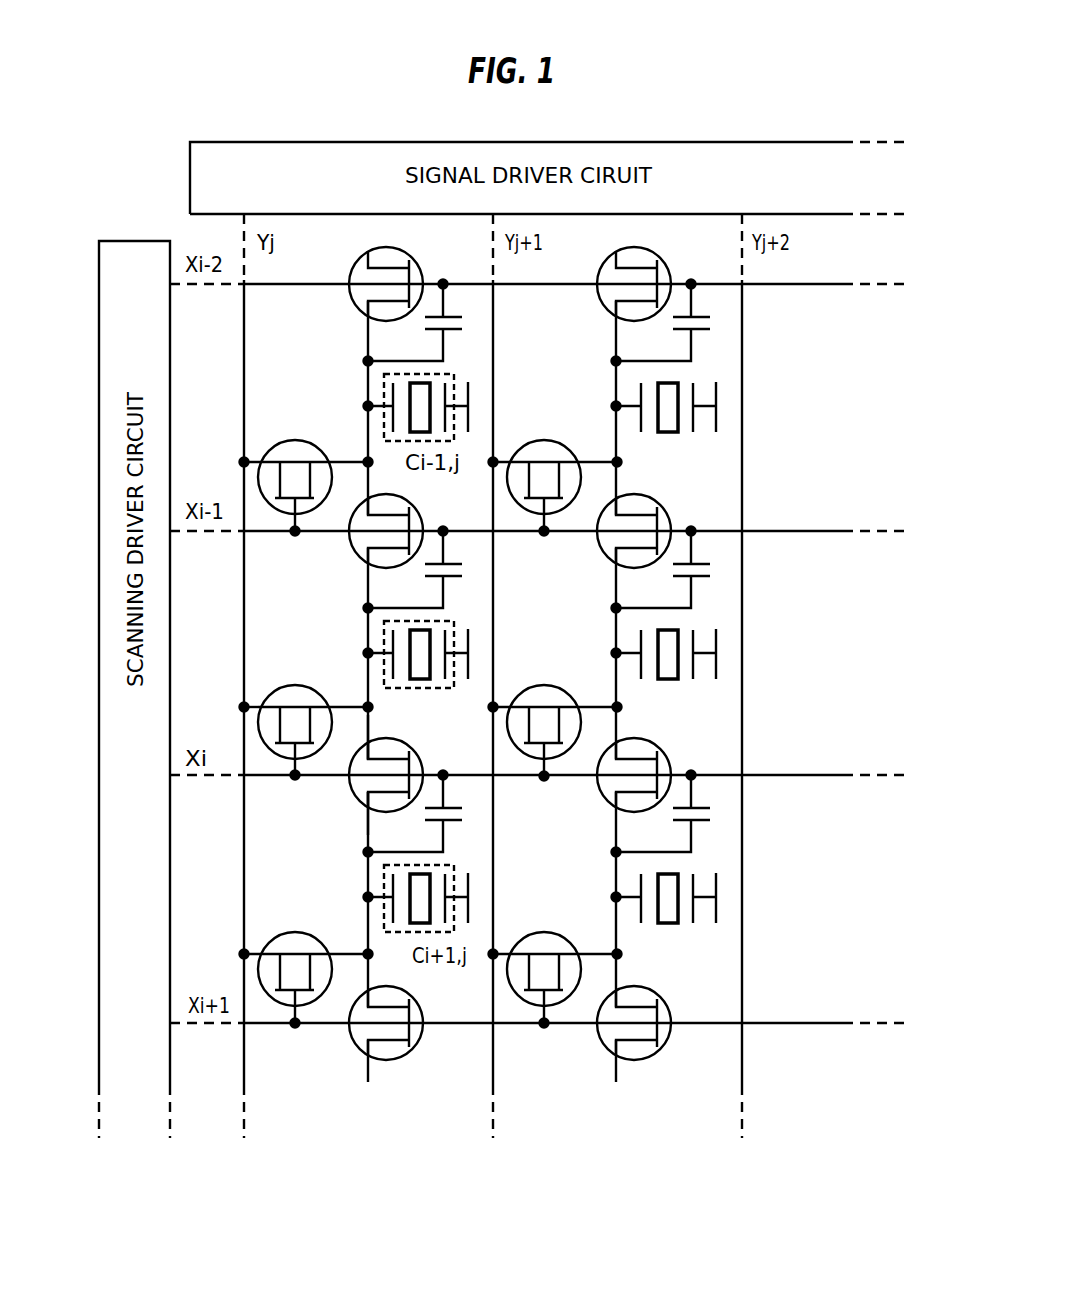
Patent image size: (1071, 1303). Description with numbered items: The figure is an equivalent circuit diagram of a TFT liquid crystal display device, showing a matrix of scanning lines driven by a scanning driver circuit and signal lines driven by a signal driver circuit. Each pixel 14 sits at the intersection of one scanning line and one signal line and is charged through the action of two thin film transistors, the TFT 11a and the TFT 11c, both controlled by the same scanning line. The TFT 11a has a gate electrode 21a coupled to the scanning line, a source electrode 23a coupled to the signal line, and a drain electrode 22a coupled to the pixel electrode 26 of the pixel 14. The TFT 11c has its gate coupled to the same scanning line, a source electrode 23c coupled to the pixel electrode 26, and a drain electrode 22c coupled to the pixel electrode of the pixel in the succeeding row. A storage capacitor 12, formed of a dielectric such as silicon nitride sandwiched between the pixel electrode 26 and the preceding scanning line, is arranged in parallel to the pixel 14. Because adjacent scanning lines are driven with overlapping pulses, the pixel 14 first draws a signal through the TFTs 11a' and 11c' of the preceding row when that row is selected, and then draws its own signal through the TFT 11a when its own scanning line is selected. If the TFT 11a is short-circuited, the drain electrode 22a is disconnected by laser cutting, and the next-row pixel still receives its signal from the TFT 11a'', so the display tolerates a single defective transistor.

The storage capacitor 12 is at (426, 568).
The TFT 11a' is at (306, 460).
The TFT 11a is at (282, 723).
The TFT 11a'' is at (306, 954).
The TFT 11c' is at (354, 537).
The TFT 11c is at (377, 794).
The gate electrode 21a is at (292, 762).
The drain electrode 22a is at (337, 703).
The source electrode 23a is at (255, 703).
The drain electrode 22c is at (367, 819).
The source electrode 23c is at (372, 725).
The pixel electrode 26 is at (392, 641).
The pixel 14 is at (397, 688).